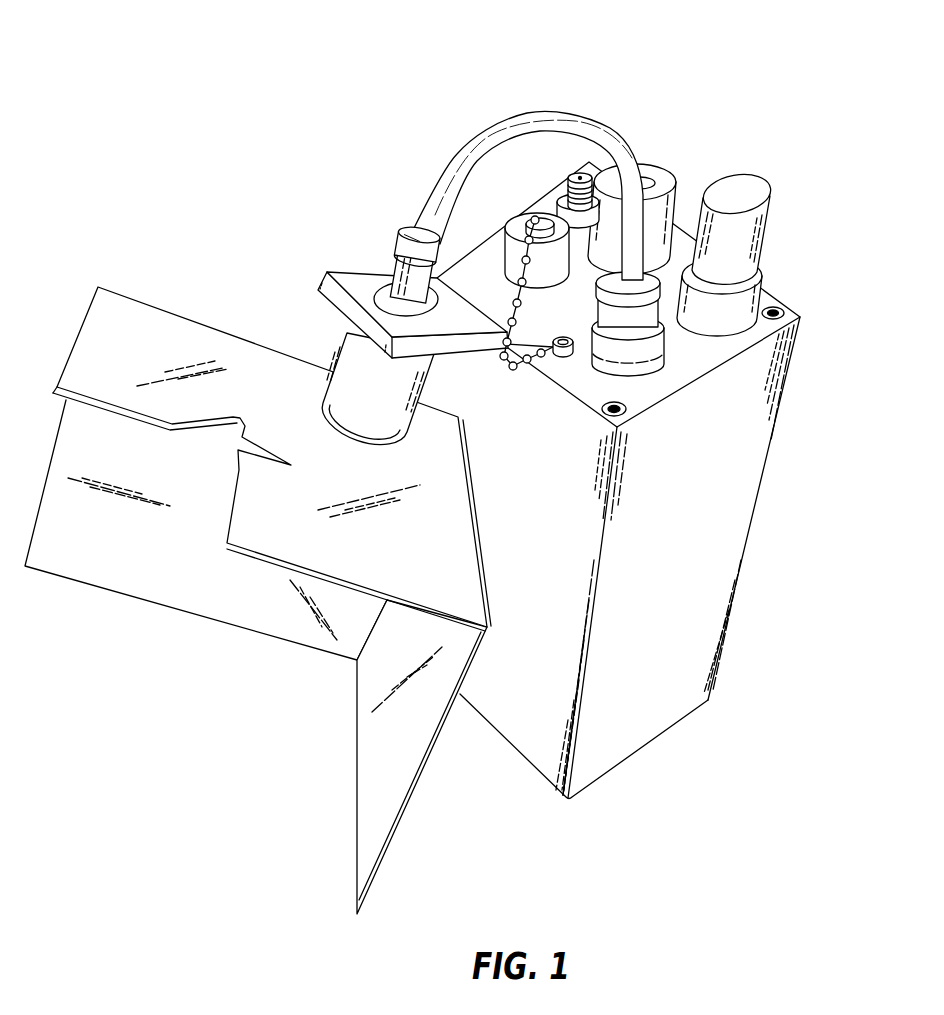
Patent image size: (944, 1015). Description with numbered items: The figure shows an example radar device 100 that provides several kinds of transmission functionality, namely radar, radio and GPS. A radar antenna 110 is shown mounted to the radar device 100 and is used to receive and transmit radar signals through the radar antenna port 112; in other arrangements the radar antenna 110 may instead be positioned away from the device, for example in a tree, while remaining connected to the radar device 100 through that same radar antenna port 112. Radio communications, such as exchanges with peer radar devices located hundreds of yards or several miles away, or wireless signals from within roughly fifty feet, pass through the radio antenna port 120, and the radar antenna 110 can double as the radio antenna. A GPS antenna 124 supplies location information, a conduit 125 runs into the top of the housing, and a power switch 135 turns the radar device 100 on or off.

The radar device 100 is at (216, 91).
The radar antenna 110 is at (133, 316).
The radar antenna port 112 is at (642, 325).
The radio antenna port 120 is at (577, 174).
The GPS antenna 124 is at (755, 193).
The conduit 125 is at (512, 127).
The power switch 135 is at (652, 163).